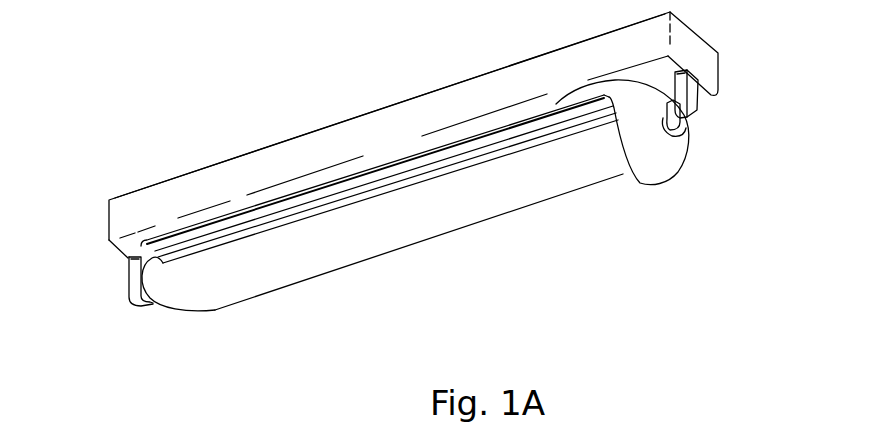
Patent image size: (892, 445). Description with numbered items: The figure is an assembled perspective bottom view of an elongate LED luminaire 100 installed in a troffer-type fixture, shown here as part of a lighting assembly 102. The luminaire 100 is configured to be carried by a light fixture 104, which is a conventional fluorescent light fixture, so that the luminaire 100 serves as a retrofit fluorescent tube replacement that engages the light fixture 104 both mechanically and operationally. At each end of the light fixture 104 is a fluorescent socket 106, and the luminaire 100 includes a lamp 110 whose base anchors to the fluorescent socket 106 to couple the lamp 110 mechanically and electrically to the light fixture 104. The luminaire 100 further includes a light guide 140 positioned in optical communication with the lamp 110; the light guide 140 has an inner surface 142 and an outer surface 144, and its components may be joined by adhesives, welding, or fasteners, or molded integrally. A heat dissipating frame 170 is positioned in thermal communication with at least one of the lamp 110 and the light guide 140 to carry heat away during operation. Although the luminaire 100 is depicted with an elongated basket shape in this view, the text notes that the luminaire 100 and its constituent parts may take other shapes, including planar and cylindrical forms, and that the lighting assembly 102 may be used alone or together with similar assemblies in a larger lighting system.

The elongate LED luminaire 100 is at (198, 366).
The lighting assembly 102 is at (282, 96).
The light fixture 104 is at (377, 120).
The fluorescent socket 106 is at (140, 305).
The lamp 110 is at (688, 136).
The light guide 140 is at (253, 298).
The inner surface 142 is at (382, 227).
The outer surface 144 is at (650, 178).
The heat dissipating frame 170 is at (550, 103).